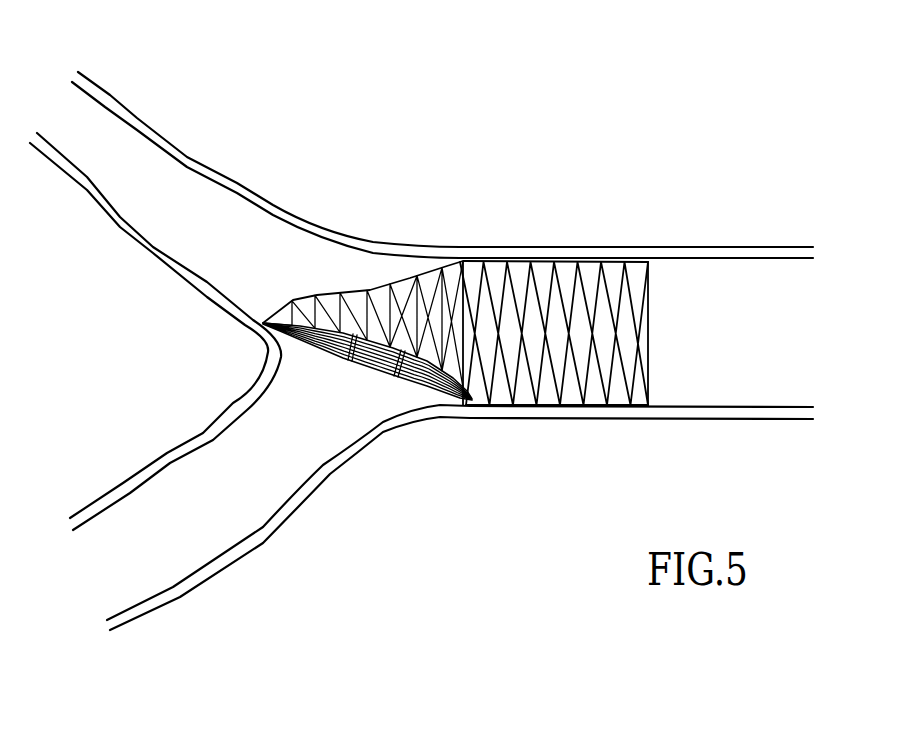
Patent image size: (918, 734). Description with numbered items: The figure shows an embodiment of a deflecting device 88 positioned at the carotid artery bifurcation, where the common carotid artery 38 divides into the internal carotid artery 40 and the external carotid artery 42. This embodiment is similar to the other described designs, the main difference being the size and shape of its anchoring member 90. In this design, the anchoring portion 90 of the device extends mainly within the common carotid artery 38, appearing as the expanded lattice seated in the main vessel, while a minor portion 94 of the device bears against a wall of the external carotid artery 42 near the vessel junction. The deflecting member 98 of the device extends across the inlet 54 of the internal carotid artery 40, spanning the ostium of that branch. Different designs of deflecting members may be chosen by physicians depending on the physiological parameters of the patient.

The common carotid artery 38 is at (683, 250).
The internal carotid artery 40 is at (253, 540).
The external carotid artery 42 is at (133, 122).
The inlet 54 is at (330, 378).
The deflecting device 88 is at (455, 282).
The anchoring member 90 is at (583, 287).
The minor portion 94 is at (262, 330).
The deflecting member 98 is at (365, 380).